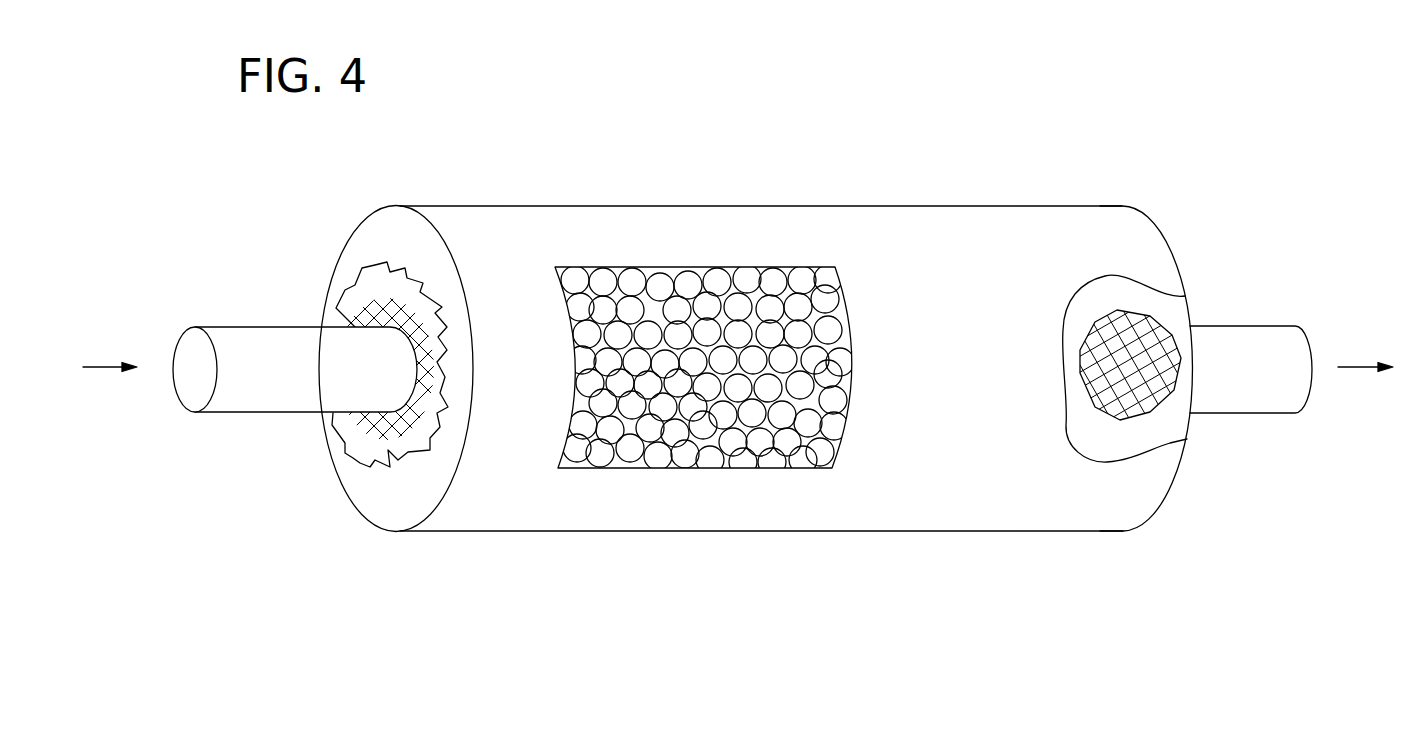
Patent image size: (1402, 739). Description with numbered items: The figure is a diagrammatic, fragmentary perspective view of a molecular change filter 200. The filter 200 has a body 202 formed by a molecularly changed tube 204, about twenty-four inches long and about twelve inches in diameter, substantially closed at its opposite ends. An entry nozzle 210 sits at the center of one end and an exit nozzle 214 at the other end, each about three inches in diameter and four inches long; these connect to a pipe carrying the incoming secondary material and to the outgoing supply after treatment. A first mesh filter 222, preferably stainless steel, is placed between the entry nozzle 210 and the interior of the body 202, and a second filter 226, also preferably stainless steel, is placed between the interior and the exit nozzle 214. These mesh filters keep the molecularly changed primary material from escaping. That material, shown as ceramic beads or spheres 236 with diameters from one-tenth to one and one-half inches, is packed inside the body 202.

The molecular change filter 200 is at (931, 114).
The body 202 is at (777, 195).
The molecularly changed tube 204 is at (1069, 206).
The entry nozzle 210 is at (232, 327).
The exit nozzle 214 is at (1266, 326).
The first mesh filter 222 is at (383, 425).
The second filter 226 is at (1150, 427).
The ceramic beads or spheres 236 is at (722, 417).